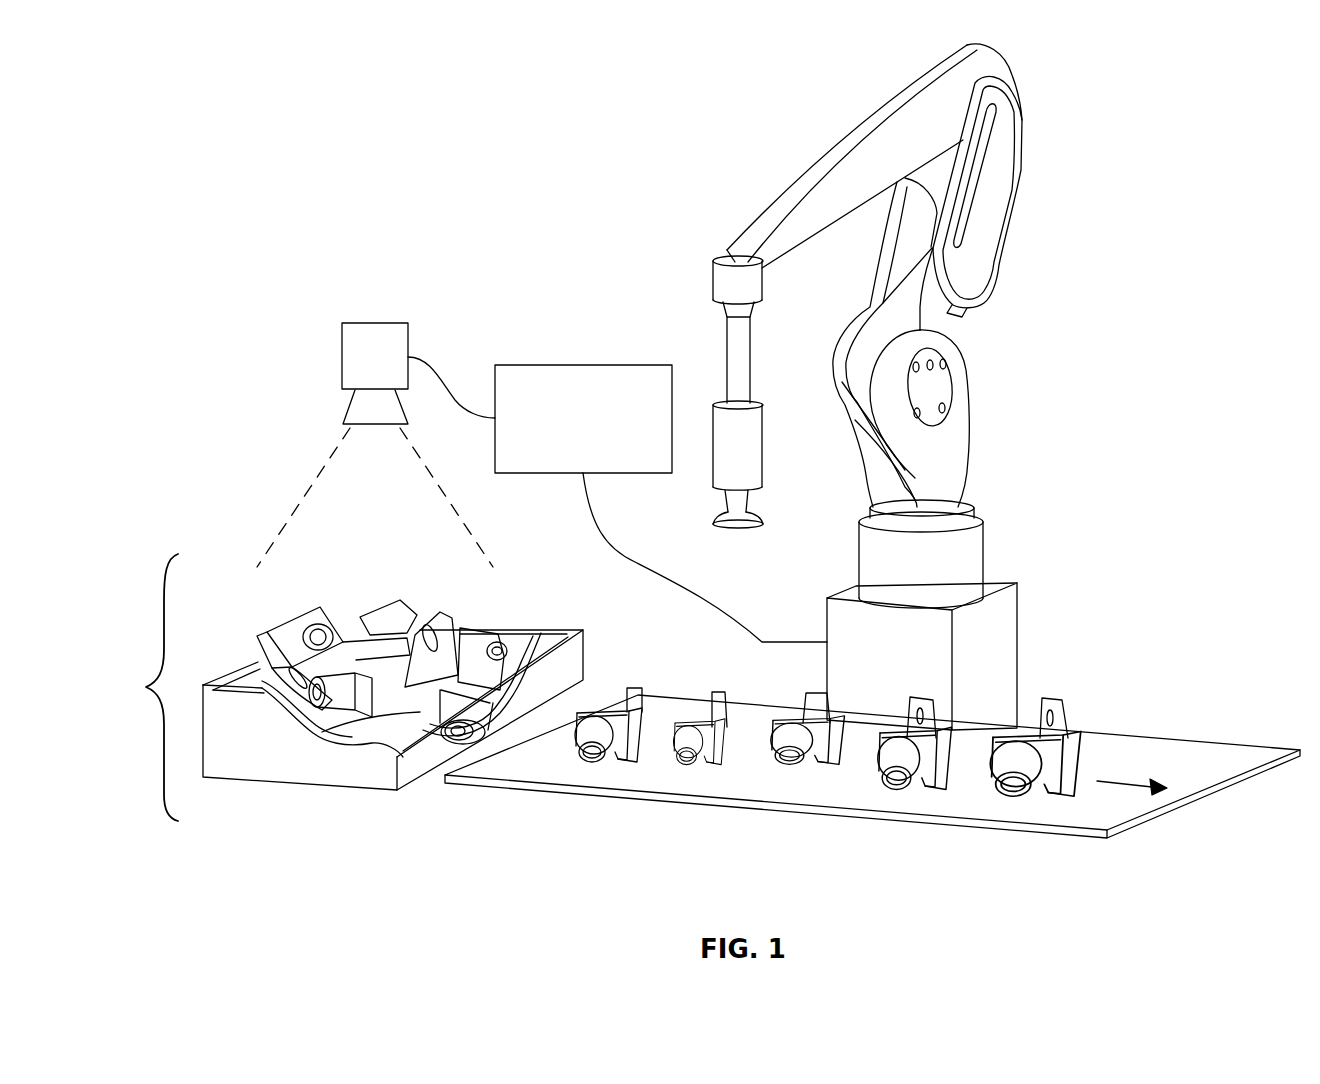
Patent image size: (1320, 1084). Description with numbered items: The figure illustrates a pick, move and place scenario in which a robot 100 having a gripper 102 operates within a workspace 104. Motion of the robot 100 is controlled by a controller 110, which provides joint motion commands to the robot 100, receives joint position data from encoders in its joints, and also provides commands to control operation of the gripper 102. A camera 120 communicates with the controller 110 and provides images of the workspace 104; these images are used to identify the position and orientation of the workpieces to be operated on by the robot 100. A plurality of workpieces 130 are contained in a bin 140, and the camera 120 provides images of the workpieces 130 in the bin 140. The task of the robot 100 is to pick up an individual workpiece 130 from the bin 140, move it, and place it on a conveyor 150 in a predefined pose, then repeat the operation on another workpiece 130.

The robot 100 is at (1036, 367).
The gripper 102 is at (745, 518).
The workspace 104 is at (140, 687).
The controller 110 is at (555, 473).
The camera 120 is at (408, 339).
The workpieces 130 is at (340, 590).
The bin 140 is at (328, 788).
The conveyor 150 is at (1027, 838).